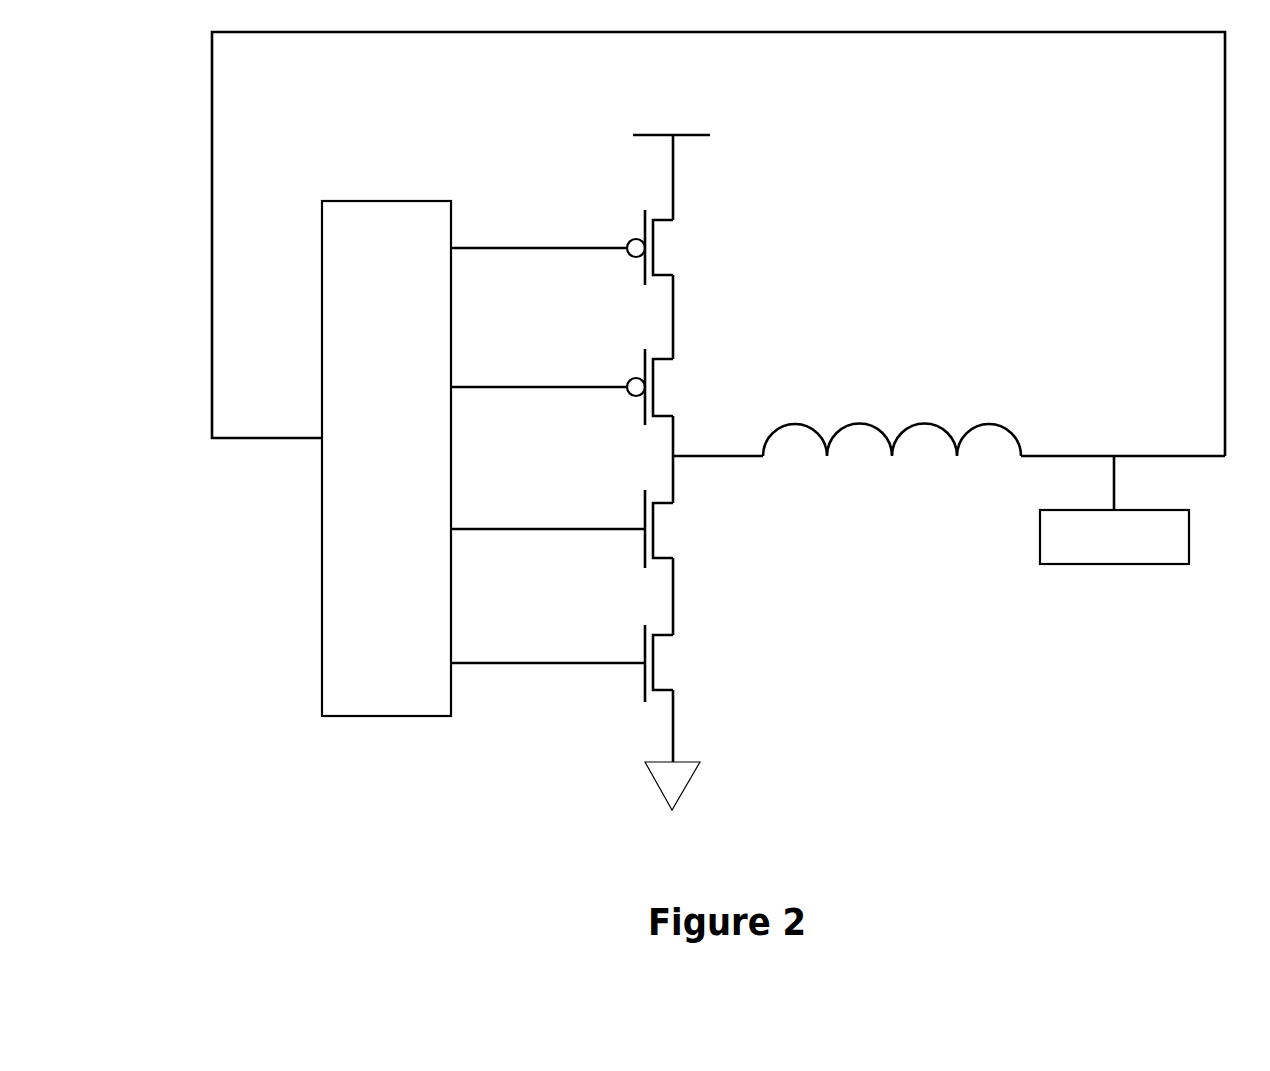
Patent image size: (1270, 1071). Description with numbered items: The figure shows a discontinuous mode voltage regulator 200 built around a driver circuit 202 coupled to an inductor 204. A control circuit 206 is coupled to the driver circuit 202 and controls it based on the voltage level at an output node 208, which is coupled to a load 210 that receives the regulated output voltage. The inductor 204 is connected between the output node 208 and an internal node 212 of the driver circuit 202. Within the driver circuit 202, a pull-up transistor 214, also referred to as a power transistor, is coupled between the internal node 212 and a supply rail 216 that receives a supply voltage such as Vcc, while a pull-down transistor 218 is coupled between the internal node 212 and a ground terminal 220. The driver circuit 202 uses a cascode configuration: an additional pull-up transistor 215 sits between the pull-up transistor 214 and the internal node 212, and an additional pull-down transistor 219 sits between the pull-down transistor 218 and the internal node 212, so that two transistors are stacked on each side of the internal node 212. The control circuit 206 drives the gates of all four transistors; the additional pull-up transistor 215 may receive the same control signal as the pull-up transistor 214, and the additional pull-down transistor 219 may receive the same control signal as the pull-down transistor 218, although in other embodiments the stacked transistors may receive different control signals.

The voltage regulator 200 is at (168, 122).
The driver circuit 202 is at (574, 184).
The inductor 204 is at (912, 425).
The control circuit 206 is at (386, 458).
The output node 208 is at (1058, 455).
The load 210 is at (1114, 537).
The internal node 212 is at (676, 458).
The pull-up transistor 214 is at (645, 273).
The additional pull-up transistor 215 is at (645, 409).
The supply rail 216 is at (692, 137).
The pull-down transistor 218 is at (645, 689).
The additional pull-down transistor 219 is at (645, 553).
The ground terminal 220 is at (690, 782).